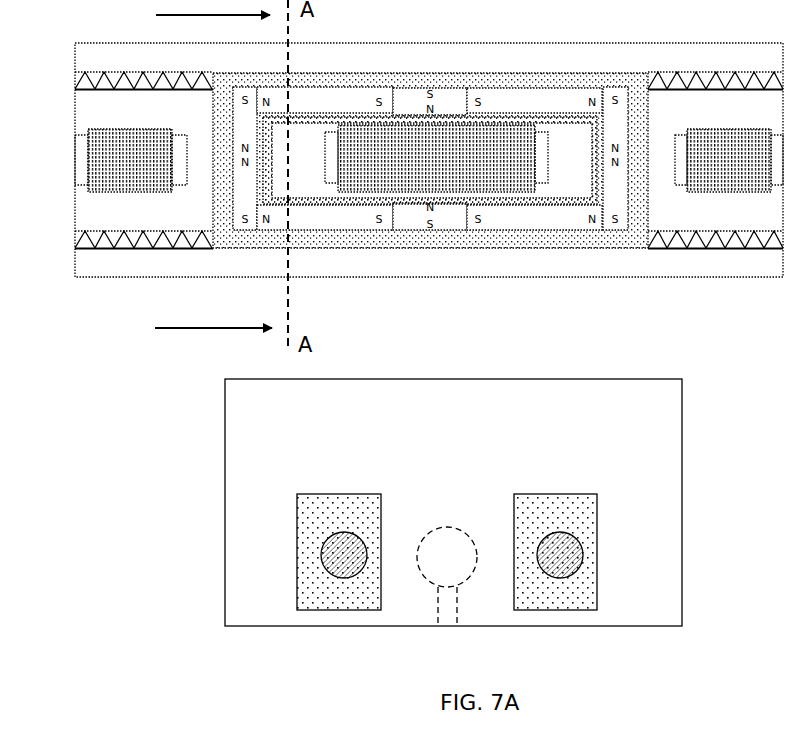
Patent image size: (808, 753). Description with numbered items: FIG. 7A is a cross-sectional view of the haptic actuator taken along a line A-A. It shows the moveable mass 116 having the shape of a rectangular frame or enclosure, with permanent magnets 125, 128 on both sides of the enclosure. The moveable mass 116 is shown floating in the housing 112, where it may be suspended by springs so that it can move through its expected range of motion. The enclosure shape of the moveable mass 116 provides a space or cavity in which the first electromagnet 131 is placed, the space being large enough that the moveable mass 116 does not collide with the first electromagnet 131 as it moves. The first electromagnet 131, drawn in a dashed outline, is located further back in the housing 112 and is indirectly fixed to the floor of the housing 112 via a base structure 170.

The housing 112 is at (466, 379).
The moveable mass 116 is at (334, 494).
The permanent magnet 125 is at (325, 562).
The permanent magnet 128 is at (580, 555).
The first electromagnet 131 is at (447, 557).
The base structure 170 is at (438, 612).